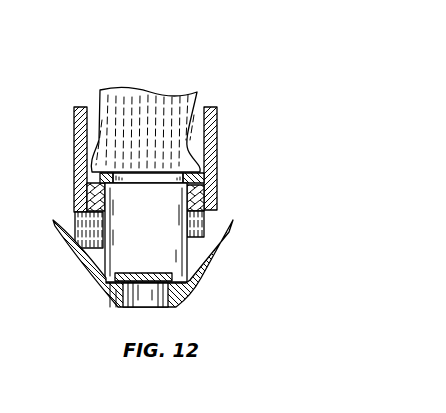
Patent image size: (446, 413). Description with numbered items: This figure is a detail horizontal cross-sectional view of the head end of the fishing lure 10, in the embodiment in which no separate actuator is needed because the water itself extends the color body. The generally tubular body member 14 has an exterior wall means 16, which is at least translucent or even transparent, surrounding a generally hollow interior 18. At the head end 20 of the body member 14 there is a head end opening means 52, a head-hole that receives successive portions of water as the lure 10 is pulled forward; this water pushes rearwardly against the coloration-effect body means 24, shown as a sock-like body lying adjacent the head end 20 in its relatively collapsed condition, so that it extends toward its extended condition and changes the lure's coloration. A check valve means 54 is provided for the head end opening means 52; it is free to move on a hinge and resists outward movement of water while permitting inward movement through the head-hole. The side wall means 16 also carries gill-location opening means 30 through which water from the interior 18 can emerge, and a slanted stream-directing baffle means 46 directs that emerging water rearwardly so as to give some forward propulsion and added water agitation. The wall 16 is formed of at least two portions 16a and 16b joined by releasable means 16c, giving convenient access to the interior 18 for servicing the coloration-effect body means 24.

The fishing lure 10 is at (164, 196).
The body member 14 is at (189, 168).
The exterior wall means 16 is at (189, 168).
The wall portion 16a is at (237, 227).
The wall portion 16b is at (218, 160).
The releasable means 16c is at (214, 193).
The hollow interior 18 is at (198, 124).
The head end 20 is at (150, 278).
The coloration-effect body means 24 is at (152, 95).
The opening means 30 is at (222, 218).
The stream-directing baffle means 46 is at (230, 241).
The head end opening means 52 is at (152, 308).
The check valve means 54 is at (130, 308).